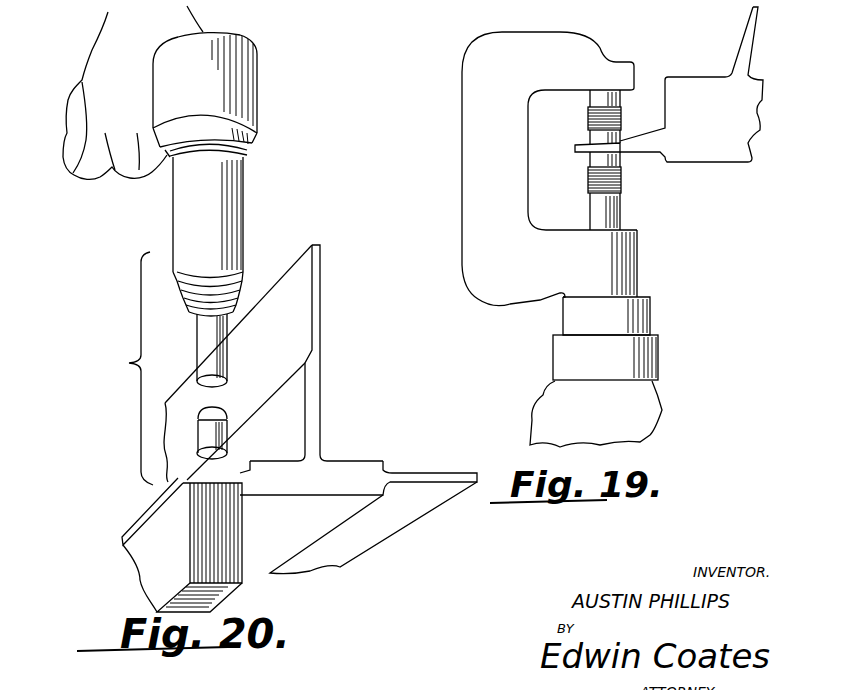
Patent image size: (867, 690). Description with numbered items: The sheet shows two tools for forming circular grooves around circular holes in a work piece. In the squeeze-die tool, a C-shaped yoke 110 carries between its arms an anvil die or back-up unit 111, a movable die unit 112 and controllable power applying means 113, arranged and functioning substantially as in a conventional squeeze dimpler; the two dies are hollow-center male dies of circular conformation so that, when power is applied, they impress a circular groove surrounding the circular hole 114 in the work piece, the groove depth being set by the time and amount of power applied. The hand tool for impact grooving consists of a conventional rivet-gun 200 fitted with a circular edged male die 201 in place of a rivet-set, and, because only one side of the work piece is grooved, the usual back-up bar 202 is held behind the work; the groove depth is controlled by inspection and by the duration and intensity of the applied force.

In FIG. 19, the yoke 110 is at (495, 162).
In FIG. 19, the anvil die 111 is at (580, 116).
In FIG. 19, the movable die unit 112 is at (585, 184).
In FIG. 19, the controllable power applying means 113 is at (544, 364).
In FIG. 19, the circular hole 114 is at (578, 148).
In FIG. 20, the rivet-gun 200 is at (227, 348).
In FIG. 20, the circular edged male die 201 is at (210, 433).
In FIG. 20, the back-up bar 202 is at (177, 523).